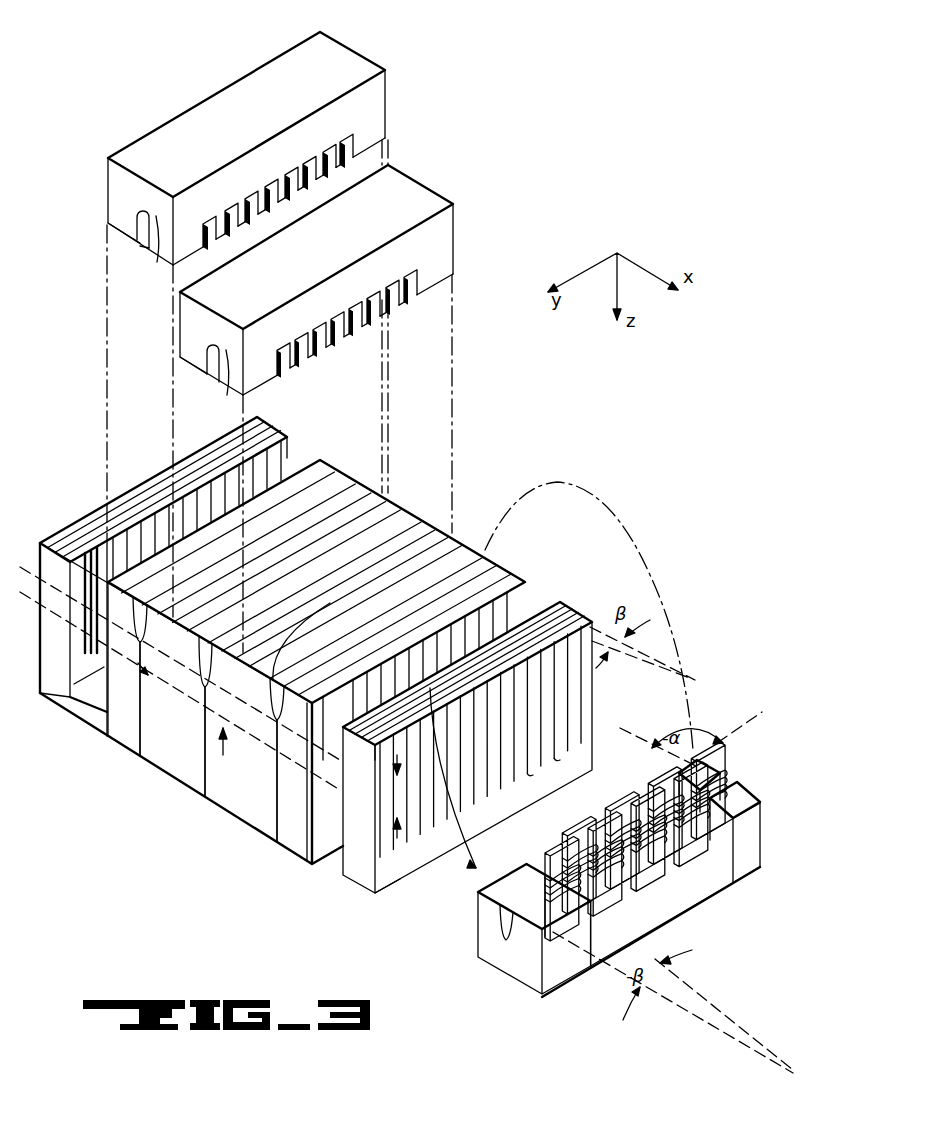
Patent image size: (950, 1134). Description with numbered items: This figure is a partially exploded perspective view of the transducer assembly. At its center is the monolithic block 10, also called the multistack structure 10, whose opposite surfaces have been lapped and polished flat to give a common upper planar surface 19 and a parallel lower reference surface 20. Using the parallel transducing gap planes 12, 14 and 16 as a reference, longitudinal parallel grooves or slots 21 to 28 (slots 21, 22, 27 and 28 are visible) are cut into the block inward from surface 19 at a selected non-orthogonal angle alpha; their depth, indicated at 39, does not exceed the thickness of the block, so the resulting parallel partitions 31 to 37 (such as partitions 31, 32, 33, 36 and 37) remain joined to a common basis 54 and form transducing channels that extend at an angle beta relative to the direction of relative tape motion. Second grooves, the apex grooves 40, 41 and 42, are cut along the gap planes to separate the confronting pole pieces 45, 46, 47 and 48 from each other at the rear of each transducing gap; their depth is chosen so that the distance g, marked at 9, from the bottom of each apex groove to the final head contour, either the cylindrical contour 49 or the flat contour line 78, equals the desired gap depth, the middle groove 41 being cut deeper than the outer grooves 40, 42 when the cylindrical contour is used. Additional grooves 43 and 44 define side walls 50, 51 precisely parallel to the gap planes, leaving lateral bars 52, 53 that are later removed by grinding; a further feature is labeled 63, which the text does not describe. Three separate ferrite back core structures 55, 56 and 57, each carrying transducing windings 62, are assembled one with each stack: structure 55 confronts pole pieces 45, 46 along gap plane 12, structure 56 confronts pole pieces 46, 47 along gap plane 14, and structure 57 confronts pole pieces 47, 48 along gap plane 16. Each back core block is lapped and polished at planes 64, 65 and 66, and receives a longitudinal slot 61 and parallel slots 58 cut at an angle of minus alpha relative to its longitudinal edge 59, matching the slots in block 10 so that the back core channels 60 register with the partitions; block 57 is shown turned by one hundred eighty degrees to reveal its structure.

The gap 9 is at (307, 783).
The monolithic block 10 is at (157, 832).
The gap plane 12 is at (142, 758).
The gap plane 14 is at (207, 787).
The gap plane 16 is at (277, 823).
The upper planar surface 19 is at (400, 512).
The lower reference surface 20 is at (291, 644).
The longitudinal groove 21 is at (178, 451).
The longitudinal groove 22 is at (170, 465).
The longitudinal groove 27 is at (87, 525).
The longitudinal groove 28 is at (67, 537).
The partition 31 is at (563, 743).
The partition 32 is at (548, 757).
The partition 33 is at (523, 773).
The partition 36 is at (475, 805).
The partition 37 is at (470, 790).
The groove depth 39 is at (450, 812).
The apex groove 40 is at (143, 624).
The apex groove 41 is at (223, 667).
The apex groove 42 is at (286, 704).
The side groove 43 is at (95, 698).
The side groove 44 is at (312, 855).
The pole piece 45 is at (248, 508).
The pole piece 46 is at (332, 548).
The pole piece 47 is at (392, 573).
The pole piece 48 is at (480, 568).
The cylindrical head contour 49 is at (190, 712).
The side wall 50 is at (313, 458).
The side wall 51 is at (513, 598).
The lateral bar 52 is at (153, 572).
The lateral bar 53 is at (481, 731).
The common basis 54 is at (397, 872).
The back core structure 55 is at (239, 147).
The back core structure 56 is at (310, 280).
The back core structure 57 is at (753, 822).
The parallel slot 58 is at (706, 868).
The longitudinal edge 59 is at (149, 227).
The back core channel 60 is at (672, 790).
The longitudinal slot 61 is at (720, 788).
The transducing winding 62 is at (727, 877).
The bar 63 is at (358, 748).
The lapped plane 64 is at (125, 238).
The lapped plane 65 is at (167, 372).
The lapped plane 66 is at (513, 877).
The flat contour surface 78 is at (368, 797).